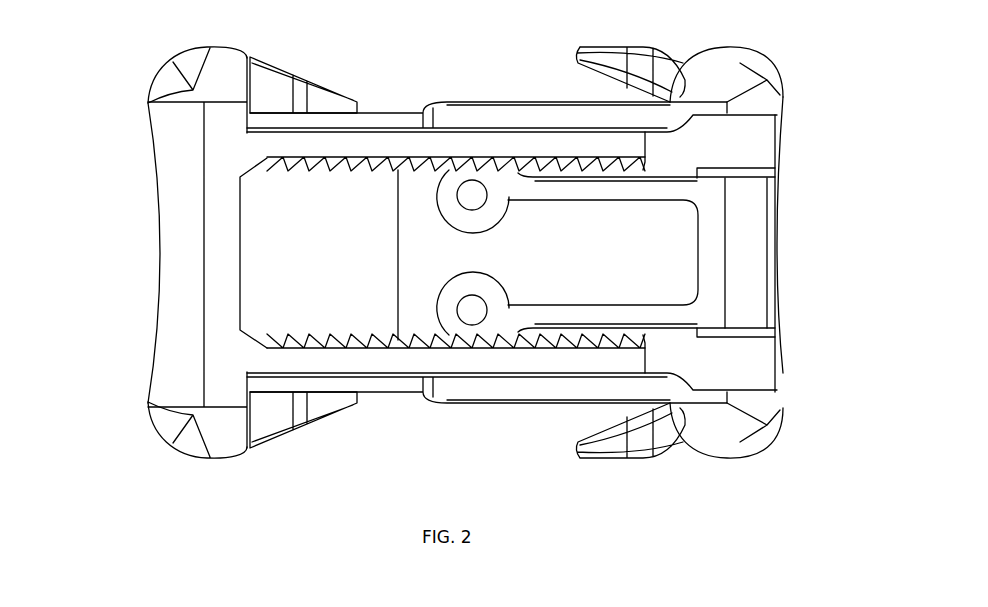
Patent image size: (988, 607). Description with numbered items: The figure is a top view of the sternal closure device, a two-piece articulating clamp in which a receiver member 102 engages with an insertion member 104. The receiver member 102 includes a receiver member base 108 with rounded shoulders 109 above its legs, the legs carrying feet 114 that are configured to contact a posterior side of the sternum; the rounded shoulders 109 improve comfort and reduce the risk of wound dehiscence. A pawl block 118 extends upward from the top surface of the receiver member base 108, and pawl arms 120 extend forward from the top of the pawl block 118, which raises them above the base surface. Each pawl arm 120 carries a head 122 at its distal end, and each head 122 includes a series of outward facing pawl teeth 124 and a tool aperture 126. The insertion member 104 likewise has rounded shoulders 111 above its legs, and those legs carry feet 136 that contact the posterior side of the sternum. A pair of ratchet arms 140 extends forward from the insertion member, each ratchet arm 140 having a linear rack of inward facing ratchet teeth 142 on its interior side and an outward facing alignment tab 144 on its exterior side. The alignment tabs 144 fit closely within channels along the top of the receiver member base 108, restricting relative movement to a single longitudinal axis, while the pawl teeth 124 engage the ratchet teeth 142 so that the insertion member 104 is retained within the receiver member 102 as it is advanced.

The receiver member 102 is at (894, 247).
The insertion member 104 is at (130, 239).
The receiver member base 108 is at (658, 257).
The rounded shoulders 109 is at (748, 80).
The rounded shoulders 111 is at (186, 75).
The feet 114 is at (602, 64).
The pawl block 118 is at (742, 217).
The pawl arms 120 is at (533, 311).
The head 122 is at (505, 203).
The pawl teeth 124 is at (455, 190).
The tool aperture 126 is at (472, 194).
The feet 136 is at (315, 93).
The ratchet arms 140 is at (470, 357).
The ratchet teeth 142 is at (430, 348).
The alignment tab 144 is at (350, 383).